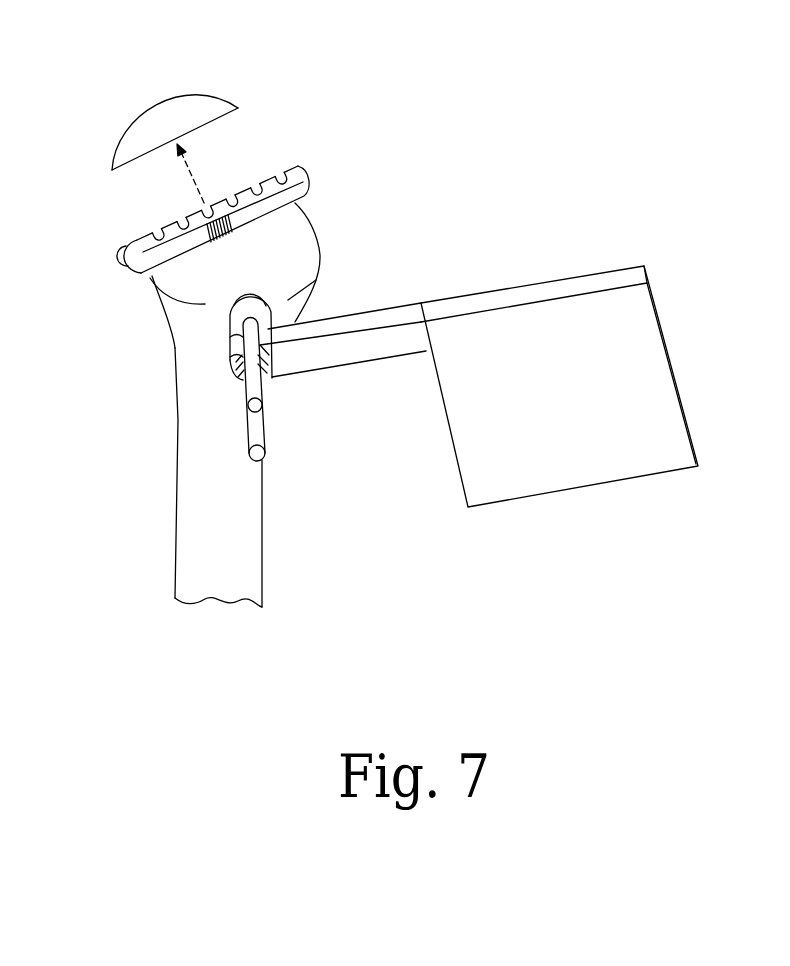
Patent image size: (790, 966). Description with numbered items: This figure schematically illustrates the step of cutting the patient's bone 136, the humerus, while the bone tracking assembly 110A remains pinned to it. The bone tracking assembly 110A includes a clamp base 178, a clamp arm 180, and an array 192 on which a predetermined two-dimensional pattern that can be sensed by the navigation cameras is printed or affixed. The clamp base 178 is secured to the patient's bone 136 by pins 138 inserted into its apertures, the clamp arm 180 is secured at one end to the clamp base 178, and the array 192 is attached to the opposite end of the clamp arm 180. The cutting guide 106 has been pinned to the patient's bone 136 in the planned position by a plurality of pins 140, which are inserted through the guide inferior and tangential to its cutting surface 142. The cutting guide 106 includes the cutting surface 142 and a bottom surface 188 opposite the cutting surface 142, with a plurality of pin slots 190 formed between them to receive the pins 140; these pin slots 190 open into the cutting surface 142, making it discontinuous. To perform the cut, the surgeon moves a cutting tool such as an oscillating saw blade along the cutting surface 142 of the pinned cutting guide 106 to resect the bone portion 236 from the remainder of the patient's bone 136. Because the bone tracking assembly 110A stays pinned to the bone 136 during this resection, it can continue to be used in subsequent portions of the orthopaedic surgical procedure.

The cutting guide 106 is at (300, 158).
The pins 140 is at (257, 178).
The cutting surface 142 is at (136, 239).
The bottom surface 188 is at (138, 264).
The pin slots 190 is at (156, 285).
The patient's bone 136 is at (195, 549).
The pins 138 is at (278, 423).
The clamp base 178 is at (276, 291).
The clamp arm 180 is at (355, 350).
The bone tracking assembly 110A is at (559, 369).
The array 192 is at (575, 453).
The bone portion 236 is at (157, 105).